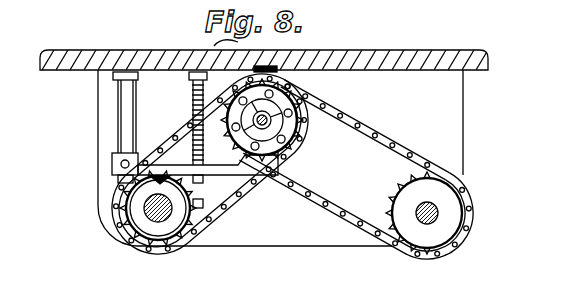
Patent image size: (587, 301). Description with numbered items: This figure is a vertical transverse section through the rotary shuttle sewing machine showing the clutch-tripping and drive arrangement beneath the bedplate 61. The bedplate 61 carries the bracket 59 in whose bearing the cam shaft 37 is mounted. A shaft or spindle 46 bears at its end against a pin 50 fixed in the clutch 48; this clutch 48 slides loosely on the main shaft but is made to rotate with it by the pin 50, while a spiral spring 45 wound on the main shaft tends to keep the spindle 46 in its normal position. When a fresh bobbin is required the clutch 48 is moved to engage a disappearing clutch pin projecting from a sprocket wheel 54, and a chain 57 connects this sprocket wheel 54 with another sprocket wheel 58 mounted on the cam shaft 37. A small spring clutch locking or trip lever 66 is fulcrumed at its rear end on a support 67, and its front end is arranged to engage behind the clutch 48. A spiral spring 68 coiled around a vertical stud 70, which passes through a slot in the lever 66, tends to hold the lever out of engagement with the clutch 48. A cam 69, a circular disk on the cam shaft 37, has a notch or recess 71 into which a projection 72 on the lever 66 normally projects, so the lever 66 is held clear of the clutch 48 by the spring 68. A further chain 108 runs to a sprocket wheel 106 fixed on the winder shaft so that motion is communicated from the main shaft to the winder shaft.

The bedplate 61 is at (362, 63).
The clutch 48 is at (272, 66).
The bracket 59 is at (333, 237).
The support 67 is at (128, 138).
The projection 72 is at (113, 164).
The notch 71 is at (120, 178).
The vertical stud 70 is at (191, 77).
The sprocket wheel 54 is at (193, 97).
The trip lever 66 is at (200, 168).
The spiral spring 68 is at (191, 125).
The chain 57 is at (228, 193).
The pin 50 is at (312, 98).
The chain 108 is at (312, 202).
The spiral spring 45 is at (302, 154).
The spindle 46 is at (268, 119).
The cam 69 is at (143, 203).
The cam shaft 37 is at (147, 213).
The sprocket wheel 58 is at (200, 207).
The sprocket wheel 106 is at (424, 213).